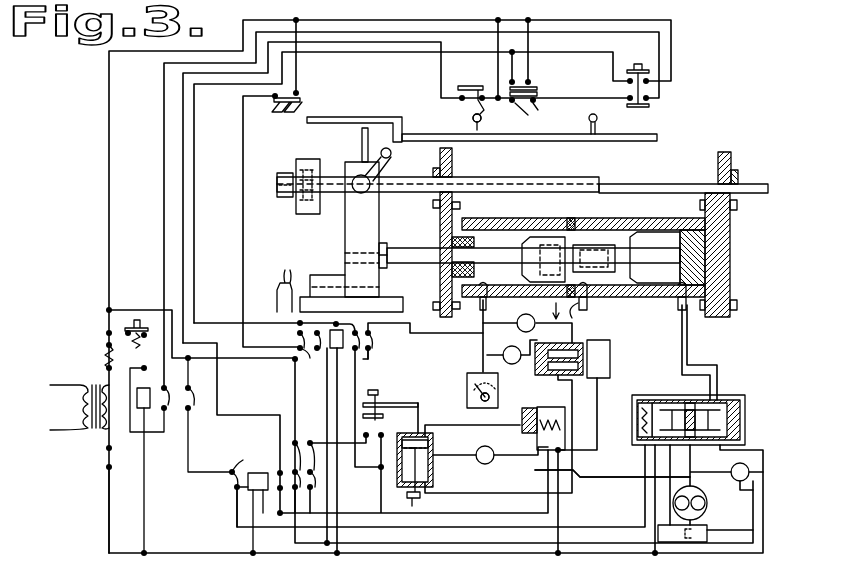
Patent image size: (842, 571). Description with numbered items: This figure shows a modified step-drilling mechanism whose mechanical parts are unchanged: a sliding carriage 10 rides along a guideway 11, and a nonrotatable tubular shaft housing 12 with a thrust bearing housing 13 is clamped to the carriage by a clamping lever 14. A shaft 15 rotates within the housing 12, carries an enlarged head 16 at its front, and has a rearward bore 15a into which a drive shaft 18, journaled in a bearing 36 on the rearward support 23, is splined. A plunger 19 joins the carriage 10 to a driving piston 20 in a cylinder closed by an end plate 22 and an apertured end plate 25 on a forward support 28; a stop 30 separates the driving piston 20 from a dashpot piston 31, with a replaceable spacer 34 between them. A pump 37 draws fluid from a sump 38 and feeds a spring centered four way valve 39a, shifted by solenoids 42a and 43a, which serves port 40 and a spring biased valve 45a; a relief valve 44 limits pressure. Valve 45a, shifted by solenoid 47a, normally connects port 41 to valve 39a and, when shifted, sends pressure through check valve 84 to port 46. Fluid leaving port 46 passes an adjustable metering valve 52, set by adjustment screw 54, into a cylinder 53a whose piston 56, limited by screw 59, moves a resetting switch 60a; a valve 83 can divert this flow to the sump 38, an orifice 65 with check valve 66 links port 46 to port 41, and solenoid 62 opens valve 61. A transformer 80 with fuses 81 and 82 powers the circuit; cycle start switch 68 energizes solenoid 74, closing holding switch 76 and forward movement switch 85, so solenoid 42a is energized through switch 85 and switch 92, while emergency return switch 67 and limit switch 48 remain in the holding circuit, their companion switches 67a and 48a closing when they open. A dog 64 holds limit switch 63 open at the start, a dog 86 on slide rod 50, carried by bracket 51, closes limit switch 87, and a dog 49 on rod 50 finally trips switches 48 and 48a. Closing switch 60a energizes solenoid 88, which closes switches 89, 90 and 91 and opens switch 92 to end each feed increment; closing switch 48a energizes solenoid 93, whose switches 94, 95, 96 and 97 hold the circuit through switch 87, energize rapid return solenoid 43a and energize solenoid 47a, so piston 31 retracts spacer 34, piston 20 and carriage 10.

The sliding carriage 10 is at (368, 229).
The guideway 11 is at (282, 280).
The tubular shaft housing 12 is at (473, 177).
The thrust bearing housing 13 is at (310, 146).
The screw type clamping lever 14 is at (393, 160).
The shaft 15 is at (396, 177).
The rearward opening bore 15a is at (520, 204).
The enlarged head 16 is at (277, 178).
The rotatable drive shaft 18 is at (642, 184).
The plunger 19 is at (383, 243).
The driving piston 20 is at (664, 264).
The end plate 22 is at (705, 248).
The fixed support 23 is at (725, 265).
The apertured end plate 25 is at (476, 270).
The fixed forward support 28 is at (396, 248).
The stop 30 is at (575, 220).
The dashpot piston 31 is at (530, 243).
The spacer 34 is at (612, 235).
The bearing 36 is at (732, 160).
The pump 37 is at (700, 492).
The sump 38 is at (702, 545).
The spring centered four way valve 39a is at (646, 456).
The port 40 is at (676, 302).
The port 41 is at (587, 300).
The solenoid 42a is at (636, 418).
The solenoid 43a is at (748, 418).
The adjustable pressure relief valve 44 is at (763, 472).
The spring biased valve 45a is at (590, 352).
The port 46 is at (488, 302).
The solenoid 47a is at (610, 362).
The limit switch 48 is at (538, 113).
The switch 48a is at (538, 88).
The dog 49 is at (598, 122).
The slide rod 50 is at (529, 127).
The bracket 51 is at (362, 140).
The metering and check valve 52 is at (467, 382).
The accumulator cylinder 53a is at (433, 458).
The adjustment screw 54 is at (498, 396).
The piston 56 is at (428, 441).
The adjusting screw 59 is at (412, 506).
The resetting switch 60a is at (398, 420).
The valve 61 is at (522, 416).
The solenoid 62 is at (565, 422).
The limit switch 63 is at (468, 86).
The dog 64 is at (481, 120).
The high resistance orifice 65 is at (580, 318).
The check valve 66 is at (512, 330).
The emergency return switch 67 is at (650, 106).
The switch 67a is at (650, 71).
The cycle start switch 68 is at (130, 320).
The solenoid 74 is at (138, 425).
The holding switch 76 is at (168, 410).
The transformer 80 is at (90, 383).
The fuse 81 is at (104, 350).
The fuse 82 is at (105, 462).
The valve 83 is at (487, 464).
The check valve 84 is at (510, 364).
The forward movement switch 85 is at (196, 410).
The dog 86 is at (336, 117).
The limit switch 87 is at (278, 106).
The solenoid 88 is at (236, 470).
The solenoid switch 89 is at (268, 473).
The solenoid switch 90 is at (297, 452).
The solenoid switch 91 is at (320, 480).
The solenoid switch 92 is at (232, 487).
The solenoid 93 is at (327, 370).
The solenoidal switch 94 is at (292, 336).
The solenoidal switch 95 is at (308, 360).
The solenoidal switch 96 is at (368, 360).
The solenoidal switch 97 is at (376, 338).